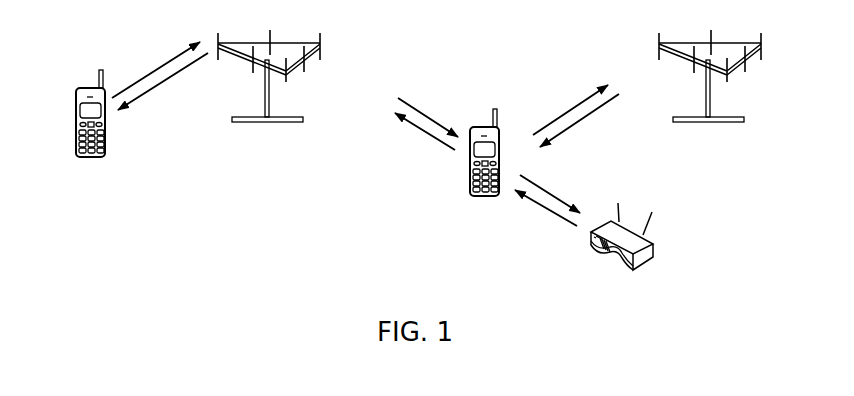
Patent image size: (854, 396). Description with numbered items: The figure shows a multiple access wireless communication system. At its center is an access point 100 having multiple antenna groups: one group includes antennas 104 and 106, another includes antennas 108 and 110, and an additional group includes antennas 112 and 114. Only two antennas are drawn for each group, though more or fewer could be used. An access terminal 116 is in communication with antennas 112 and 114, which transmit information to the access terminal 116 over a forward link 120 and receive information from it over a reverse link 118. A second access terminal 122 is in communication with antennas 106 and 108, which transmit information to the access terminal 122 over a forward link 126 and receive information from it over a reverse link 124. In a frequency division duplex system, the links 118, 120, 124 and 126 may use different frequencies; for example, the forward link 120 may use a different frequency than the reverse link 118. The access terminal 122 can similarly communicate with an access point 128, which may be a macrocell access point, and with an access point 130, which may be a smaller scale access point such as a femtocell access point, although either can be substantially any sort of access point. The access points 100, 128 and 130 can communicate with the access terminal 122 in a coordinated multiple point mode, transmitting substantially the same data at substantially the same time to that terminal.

The access point 100 is at (272, 81).
The antenna 104 is at (288, 82).
The antenna 106 is at (306, 66).
The antenna 108 is at (324, 52).
The antenna 110 is at (272, 33).
The antenna 112 is at (218, 35).
The antenna 114 is at (253, 68).
The access terminal 116 is at (86, 88).
The reverse link 118 is at (165, 63).
The forward link 120 is at (155, 87).
The access terminal 122 is at (478, 196).
The reverse link 124 is at (435, 140).
The forward link 126 is at (428, 115).
The access point 128 is at (713, 122).
The access point 130 is at (645, 265).